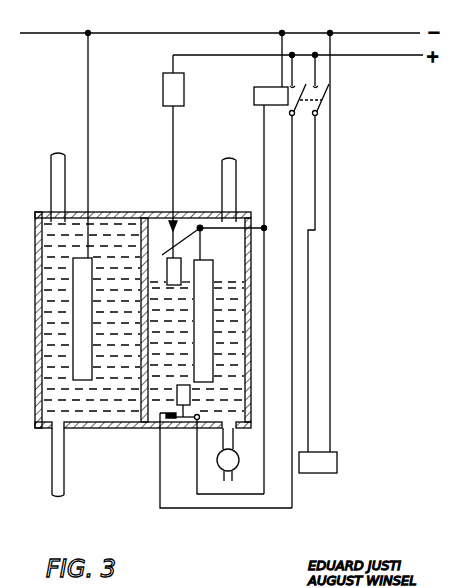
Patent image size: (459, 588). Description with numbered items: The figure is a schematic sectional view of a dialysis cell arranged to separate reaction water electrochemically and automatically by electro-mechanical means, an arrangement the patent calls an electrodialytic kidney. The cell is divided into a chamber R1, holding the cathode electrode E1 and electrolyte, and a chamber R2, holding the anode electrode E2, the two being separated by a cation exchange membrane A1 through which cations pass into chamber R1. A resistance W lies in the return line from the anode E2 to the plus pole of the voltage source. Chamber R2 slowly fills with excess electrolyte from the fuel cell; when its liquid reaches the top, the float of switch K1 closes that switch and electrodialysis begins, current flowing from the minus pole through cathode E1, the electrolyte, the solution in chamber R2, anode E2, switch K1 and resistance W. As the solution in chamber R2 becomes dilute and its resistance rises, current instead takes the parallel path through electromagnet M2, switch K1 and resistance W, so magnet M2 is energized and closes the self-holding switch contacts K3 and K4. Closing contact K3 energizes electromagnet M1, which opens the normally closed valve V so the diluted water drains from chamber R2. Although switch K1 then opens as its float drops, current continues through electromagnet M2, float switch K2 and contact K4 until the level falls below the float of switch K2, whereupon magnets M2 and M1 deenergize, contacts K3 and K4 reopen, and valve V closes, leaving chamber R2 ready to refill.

The resistance W is at (184, 76).
The electromagnet M2 is at (254, 90).
The switch contact K4 is at (289, 113).
The switch contact K3 is at (318, 113).
The electromagnet M1 is at (337, 462).
The chamber R1 is at (44, 268).
The chamber R2 is at (245, 258).
The inlet pipe A1 is at (132, 212).
The valve V is at (239, 458).
The electrode (cathode) E1 is at (80, 307).
The electrode (anode) E2 is at (208, 300).
The switch K1 is at (192, 212).
The switch K2 is at (177, 390).